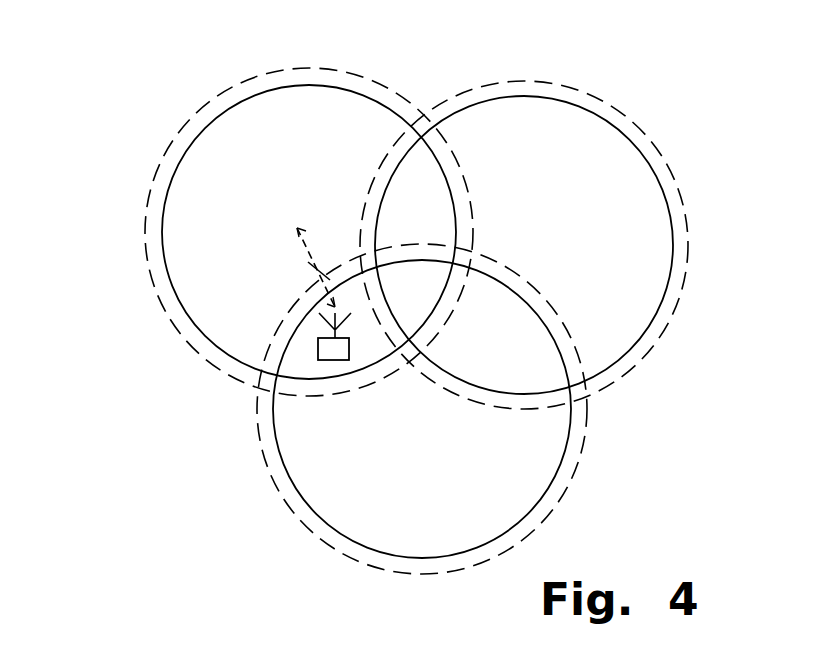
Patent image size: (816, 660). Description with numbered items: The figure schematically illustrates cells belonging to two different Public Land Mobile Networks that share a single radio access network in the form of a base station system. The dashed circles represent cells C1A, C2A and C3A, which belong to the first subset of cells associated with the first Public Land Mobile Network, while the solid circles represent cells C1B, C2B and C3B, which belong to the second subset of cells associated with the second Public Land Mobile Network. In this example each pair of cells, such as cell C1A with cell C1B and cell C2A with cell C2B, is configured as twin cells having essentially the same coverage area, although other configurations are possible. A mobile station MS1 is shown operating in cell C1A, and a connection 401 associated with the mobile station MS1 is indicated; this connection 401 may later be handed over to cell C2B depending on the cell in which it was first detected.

The cell C1A is at (170, 145).
The cell C1B is at (163, 268).
The cell C2A is at (268, 472).
The cell C2B is at (320, 523).
The cell C3A is at (517, 80).
The cell C3B is at (682, 193).
The mobile station MS1 is at (318, 350).
The connection 401 is at (294, 226).